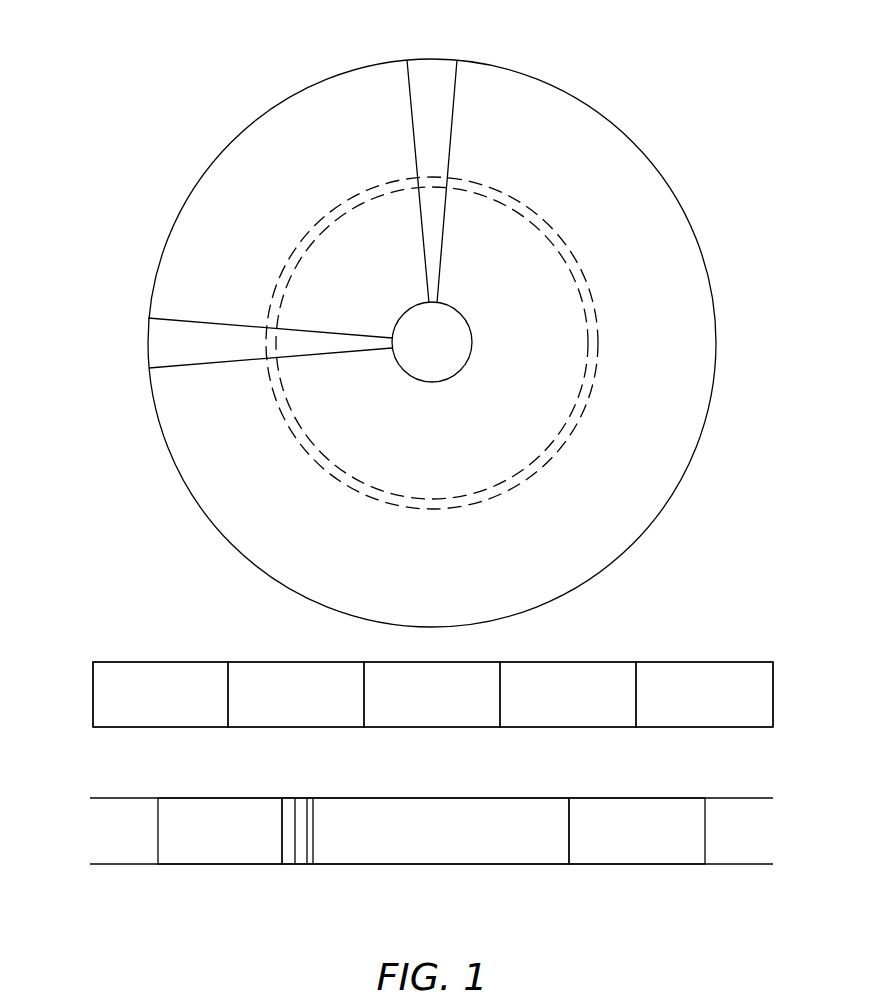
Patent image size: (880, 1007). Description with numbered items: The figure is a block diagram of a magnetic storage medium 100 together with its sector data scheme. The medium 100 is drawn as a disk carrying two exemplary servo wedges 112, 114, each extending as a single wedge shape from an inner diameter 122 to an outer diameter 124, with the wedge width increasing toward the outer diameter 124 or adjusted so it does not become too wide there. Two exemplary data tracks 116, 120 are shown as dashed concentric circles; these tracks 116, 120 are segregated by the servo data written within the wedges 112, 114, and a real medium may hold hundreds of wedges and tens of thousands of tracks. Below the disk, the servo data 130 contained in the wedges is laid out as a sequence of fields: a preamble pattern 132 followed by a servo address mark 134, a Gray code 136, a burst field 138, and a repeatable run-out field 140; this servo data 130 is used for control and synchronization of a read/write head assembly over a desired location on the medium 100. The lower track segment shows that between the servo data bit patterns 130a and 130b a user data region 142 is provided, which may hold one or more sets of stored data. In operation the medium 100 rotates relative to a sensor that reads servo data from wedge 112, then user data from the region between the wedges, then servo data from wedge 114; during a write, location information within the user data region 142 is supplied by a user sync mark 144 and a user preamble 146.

The magnetic storage medium 100 is at (182, 74).
The servo wedge 112 is at (146, 335).
The servo wedge 114 is at (442, 60).
The data track 116 is at (594, 383).
The data track 120 is at (588, 341).
The inner diameter 122 is at (430, 384).
The outer diameter 124 is at (697, 453).
The servo data 130 is at (676, 629).
The servo data bit pattern 130a is at (220, 831).
The servo data bit pattern 130b is at (637, 831).
The preamble pattern 132 is at (160, 694).
The servo address mark 134 is at (296, 694).
The Gray code 136 is at (432, 694).
The burst field 138 is at (568, 694).
The repeatable run-out (RRO) field 140 is at (704, 694).
The user data region 142 is at (568, 791).
The user sync mark 144 is at (310, 867).
The user preamble 146 is at (298, 867).